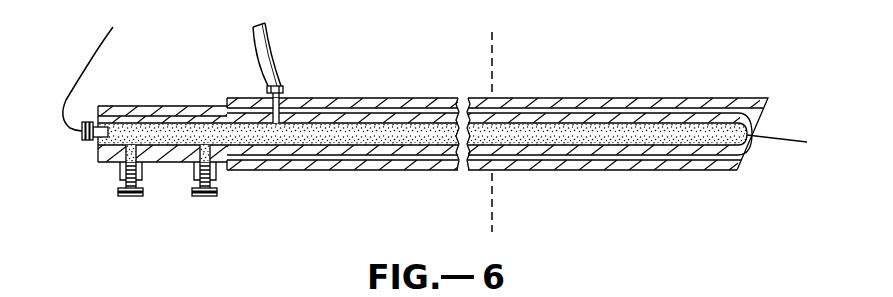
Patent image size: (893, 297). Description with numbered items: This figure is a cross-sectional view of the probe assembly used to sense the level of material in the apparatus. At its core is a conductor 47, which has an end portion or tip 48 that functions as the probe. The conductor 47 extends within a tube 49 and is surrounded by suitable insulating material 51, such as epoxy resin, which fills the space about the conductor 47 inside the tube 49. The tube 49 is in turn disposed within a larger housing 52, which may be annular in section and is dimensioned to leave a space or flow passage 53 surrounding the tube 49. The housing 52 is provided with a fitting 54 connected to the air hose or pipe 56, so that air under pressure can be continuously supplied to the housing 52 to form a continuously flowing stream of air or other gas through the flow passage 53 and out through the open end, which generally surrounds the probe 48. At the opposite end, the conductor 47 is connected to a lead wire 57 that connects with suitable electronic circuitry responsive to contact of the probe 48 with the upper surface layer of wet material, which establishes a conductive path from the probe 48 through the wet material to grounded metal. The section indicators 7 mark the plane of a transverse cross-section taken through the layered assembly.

The section line 7- 7 is at (530, 228).
The conductor 47 is at (388, 133).
The tip 48 is at (790, 144).
The tube 49 is at (405, 118).
The insulating material 51 is at (540, 128).
The housing 52 is at (652, 165).
The flow passage 53 is at (313, 153).
The fitting 54 is at (284, 90).
The air hose 56 is at (273, 53).
The lead wire 57 is at (97, 56).